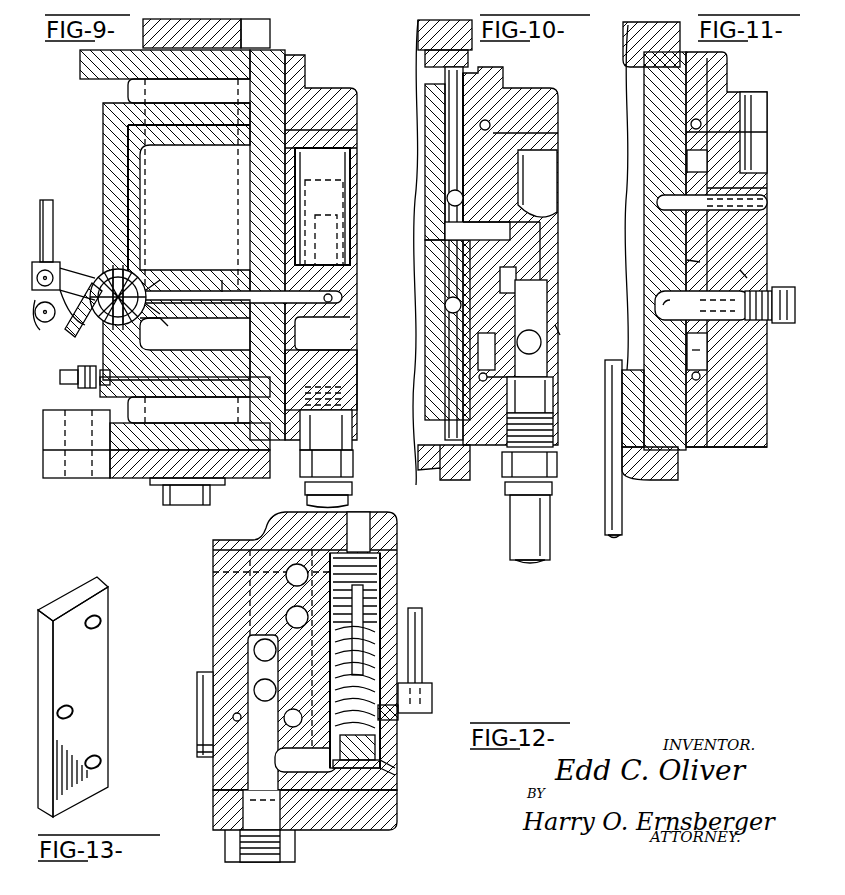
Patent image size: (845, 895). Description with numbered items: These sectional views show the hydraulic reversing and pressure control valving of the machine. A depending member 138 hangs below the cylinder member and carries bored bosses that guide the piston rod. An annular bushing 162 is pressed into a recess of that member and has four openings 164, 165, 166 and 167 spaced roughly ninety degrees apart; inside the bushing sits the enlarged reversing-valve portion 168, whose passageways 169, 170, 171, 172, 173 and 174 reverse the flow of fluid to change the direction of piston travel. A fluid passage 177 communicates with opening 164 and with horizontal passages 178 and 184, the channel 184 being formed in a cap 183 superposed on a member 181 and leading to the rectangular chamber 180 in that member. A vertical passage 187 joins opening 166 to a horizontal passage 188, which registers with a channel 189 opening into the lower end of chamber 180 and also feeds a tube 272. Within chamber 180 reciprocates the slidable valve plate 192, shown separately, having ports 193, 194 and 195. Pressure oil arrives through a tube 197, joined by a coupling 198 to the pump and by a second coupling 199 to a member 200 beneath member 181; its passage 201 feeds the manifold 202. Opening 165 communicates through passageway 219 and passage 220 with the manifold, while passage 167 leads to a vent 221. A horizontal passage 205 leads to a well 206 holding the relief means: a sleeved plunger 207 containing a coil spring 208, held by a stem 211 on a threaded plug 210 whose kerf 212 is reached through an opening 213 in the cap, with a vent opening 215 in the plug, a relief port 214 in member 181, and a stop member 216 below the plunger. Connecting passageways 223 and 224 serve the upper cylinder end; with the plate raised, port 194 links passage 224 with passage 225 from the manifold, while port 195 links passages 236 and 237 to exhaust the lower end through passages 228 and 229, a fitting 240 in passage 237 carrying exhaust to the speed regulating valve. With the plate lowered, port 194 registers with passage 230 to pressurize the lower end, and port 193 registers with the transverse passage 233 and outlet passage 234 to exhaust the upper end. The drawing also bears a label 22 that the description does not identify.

In FIG. 9, the depending member 138 is at (135, 480).
In FIG. 9, the annular bushing 162 is at (98, 260).
In FIG. 9, the opening 164 is at (130, 270).
In FIG. 9, the opening 165 is at (170, 290).
In FIG. 9, the opening 166 is at (142, 336).
In FIG. 9, the opening 167 is at (72, 328).
In FIG. 9, the enlarged portion 168 is at (96, 265).
In FIG. 9, the passageway 169 is at (125, 272).
In FIG. 9, the passageway 170 is at (120, 280).
In FIG. 9, the passageway 171 is at (158, 320).
In FIG. 9, the passageway 172 is at (103, 374).
In FIG. 9, the passageway 173 is at (90, 326).
In FIG. 9, the passageway 174 is at (88, 255).
In FIG. 9, the fluid passage 177 is at (120, 178).
In FIG. 9, the horizontal passage 178 is at (186, 130).
In FIG. 10, the rectangular recess or chamber 180 is at (500, 333).
In FIG. 11, the rectangular recess or chamber 180 is at (703, 358).
In FIG. 9, the member 181 is at (290, 247).
In FIG. 10, the member 181 is at (545, 245).
In FIG. 11, the member 181 is at (762, 360).
In FIG. 9, the cap 183 is at (348, 110).
In FIG. 10, the cap 183 is at (533, 88).
In FIG. 9, the channel 184 is at (303, 92).
In FIG. 10, the channel 184 is at (490, 125).
In FIG. 11, the channel 184 is at (733, 90).
In FIG. 9, the vertical passage 187 is at (105, 393).
In FIG. 9, the horizontal passage 188 is at (180, 378).
In FIG. 9, the channel 189 is at (248, 350).
In FIG. 10, the channel 189 is at (487, 377).
In FIG. 11, the channel 189 is at (697, 382).
In FIG. 10, the slidable valve plate 192 is at (510, 302).
In FIG. 13, the slidable valve plate 192 is at (102, 668).
In FIG. 11, the port 193 is at (700, 160).
In FIG. 13, the port 193 is at (101, 620).
In FIG. 10, the port 194 is at (522, 202).
In FIG. 13, the port 194 is at (60, 710).
In FIG. 11, the port 195 is at (700, 307).
In FIG. 13, the port 195 is at (101, 762).
In FIG. 10, the tube 197 is at (548, 556).
In FIG. 11, the coupling 198 is at (700, 260).
In FIG. 9, the second coupling 199 is at (353, 465).
In FIG. 10, the second coupling 199 is at (512, 514).
In FIG. 9, the member 200 is at (356, 417).
In FIG. 10, the member 200 is at (560, 392).
In FIG. 11, the member 200 is at (762, 422).
In FIG. 9, the passage 201 is at (347, 383).
In FIG. 10, the passage 201 is at (537, 393).
In FIG. 12, the passage 201 is at (253, 817).
In FIG. 9, the manifold passage or chamber 202 is at (340, 333).
In FIG. 10, the manifold passage or chamber 202 is at (540, 282).
In FIG. 12, the manifold passage or chamber 202 is at (257, 738).
In FIG. 10, the horizontal passage 205 is at (541, 343).
In FIG. 12, the horizontal passage 205 is at (303, 831).
In FIG. 12, the well 206 is at (421, 647).
In FIG. 12, the sleeved plunger 207 is at (383, 755).
In FIG. 12, the expansive coil spring 208 is at (372, 676).
In FIG. 12, the plug 210 is at (383, 580).
In FIG. 12, the stem or tenon 211 is at (364, 610).
In FIG. 12, the kerf 212 is at (383, 551).
In FIG. 12, the opening 213 is at (360, 522).
In FIG. 12, the relief port 214 is at (392, 721).
In FIG. 12, the vent opening 215 is at (215, 572).
In FIG. 12, the stop member 216 is at (398, 757).
In FIG. 9, the passageway 219 is at (222, 292).
In FIG. 9, the passage 220 is at (332, 298).
In FIG. 9, the vent or outlet 221 is at (88, 318).
In FIG. 10, the connecting passageway 223 is at (440, 77).
In FIG. 10, the connecting passageway 224 is at (470, 115).
In FIG. 10, the passage 225 is at (512, 230).
In FIG. 12, the passage 225 is at (262, 648).
In FIG. 10, the passage 228 is at (445, 437).
In FIG. 9, the passage 229 is at (350, 390).
In FIG. 10, the passage 230 is at (505, 275).
In FIG. 12, the passage 230 is at (263, 690).
In FIG. 10, the transverse passage 233 is at (447, 197).
In FIG. 11, the transverse passage 233 is at (677, 203).
In FIG. 11, the outlet passage 234 is at (748, 210).
In FIG. 12, the outlet passage 234 is at (287, 612).
In FIG. 10, the passage 236 is at (562, 330).
In FIG. 11, the passage 236 is at (663, 305).
In FIG. 11, the passage 237 is at (747, 273).
In FIG. 12, the passage 237 is at (284, 718).
In FIG. 11, the fitting 240 is at (755, 293).
In FIG. 9, the tube 272 is at (60, 377).
In FIG. 12, the pipe 22 is at (233, 716).